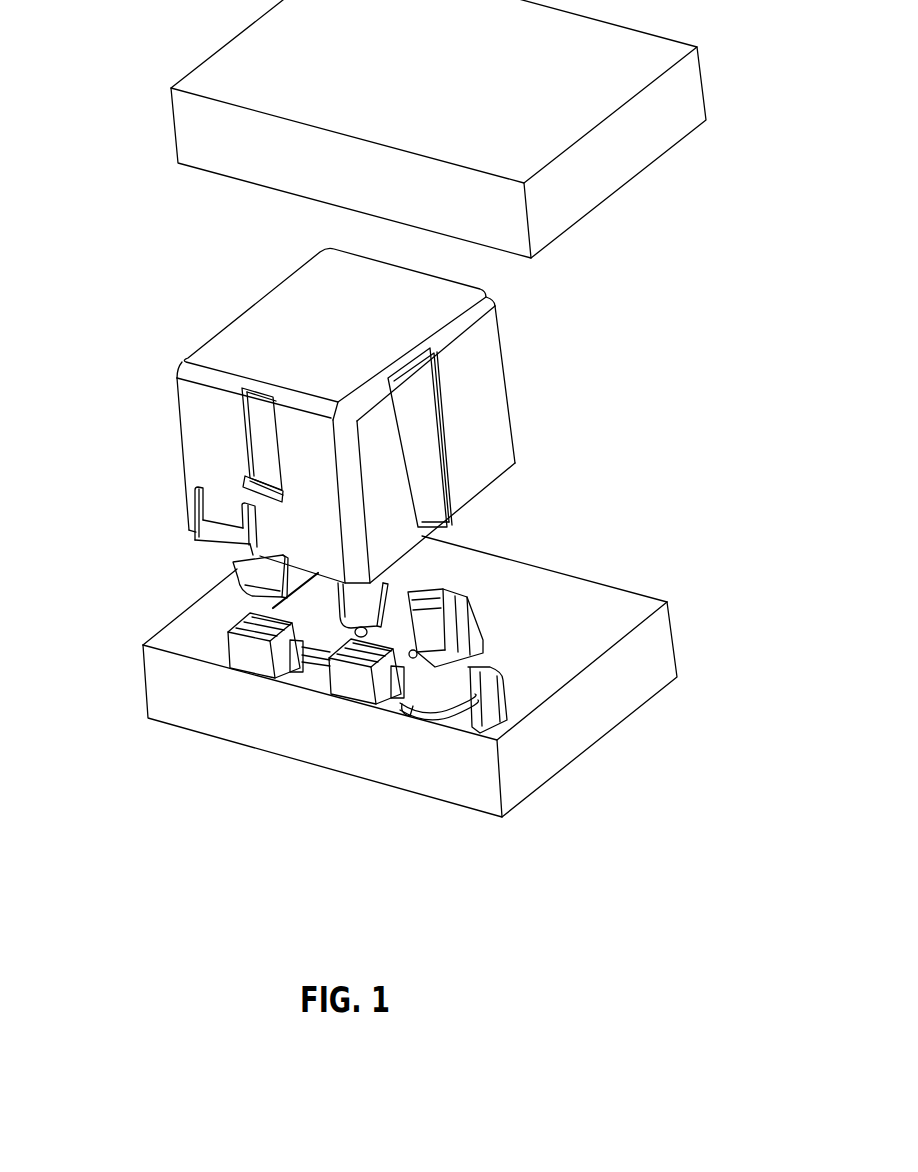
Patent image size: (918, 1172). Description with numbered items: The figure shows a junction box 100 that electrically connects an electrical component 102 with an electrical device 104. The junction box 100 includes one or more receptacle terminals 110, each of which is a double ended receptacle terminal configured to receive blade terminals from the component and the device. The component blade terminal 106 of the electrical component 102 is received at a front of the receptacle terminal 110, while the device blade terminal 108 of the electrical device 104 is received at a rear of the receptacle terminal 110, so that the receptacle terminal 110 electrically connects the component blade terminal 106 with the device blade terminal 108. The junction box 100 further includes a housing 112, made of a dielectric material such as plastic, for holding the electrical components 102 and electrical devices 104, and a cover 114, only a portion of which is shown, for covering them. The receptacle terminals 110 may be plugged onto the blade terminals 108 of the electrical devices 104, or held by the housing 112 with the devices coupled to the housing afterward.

The junction box 100 is at (138, 236).
The electrical component 102 is at (202, 435).
The electrical device 104 is at (473, 722).
The component blade terminal 106 is at (193, 527).
The device blade terminal 108 is at (433, 720).
The receptacle terminal 110 is at (433, 593).
The housing 112 is at (647, 652).
The cover 114 is at (676, 93).